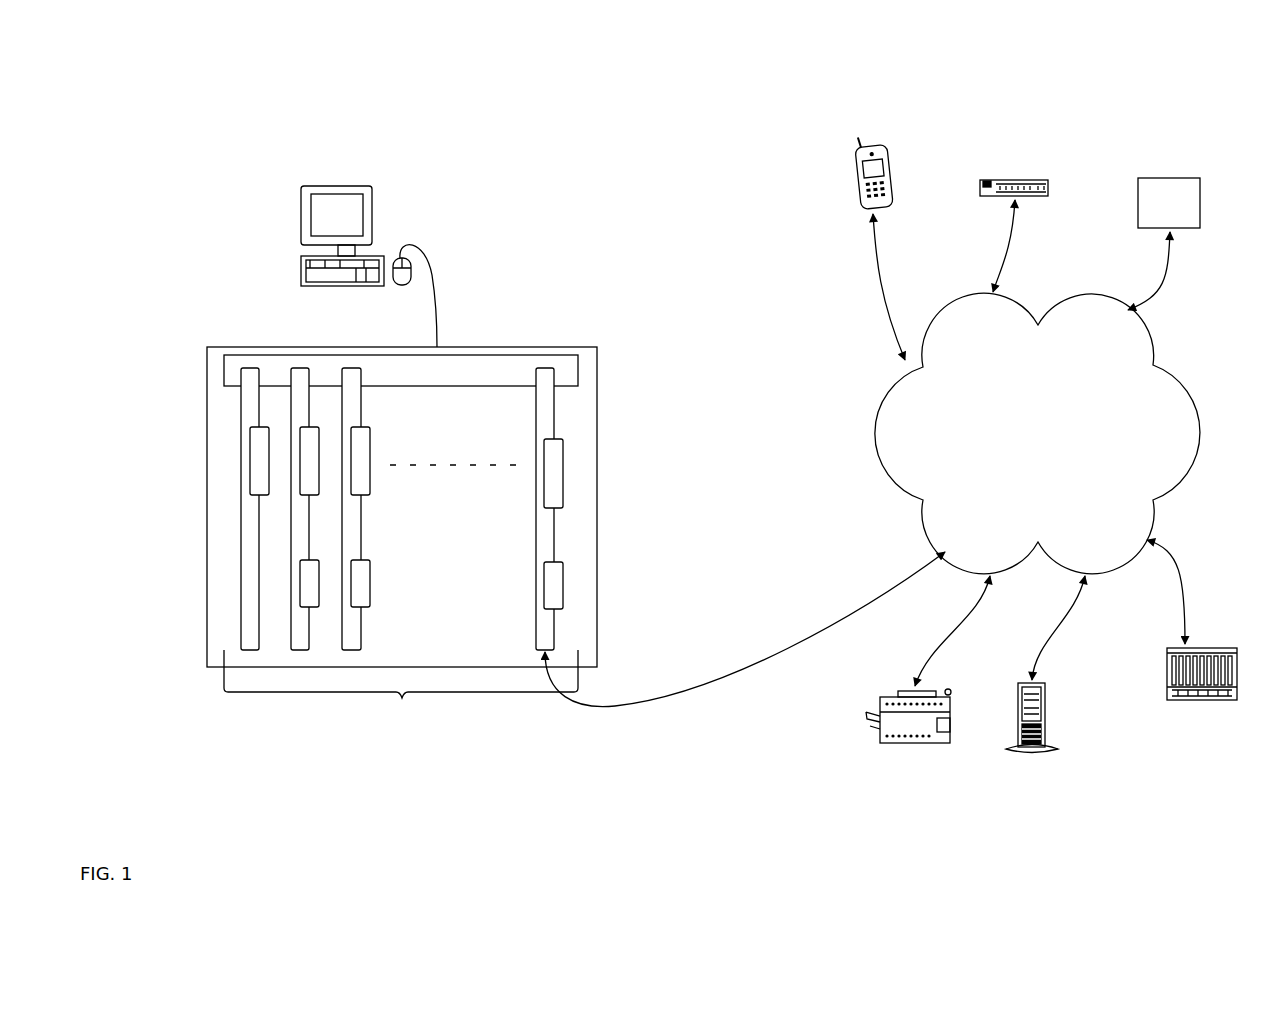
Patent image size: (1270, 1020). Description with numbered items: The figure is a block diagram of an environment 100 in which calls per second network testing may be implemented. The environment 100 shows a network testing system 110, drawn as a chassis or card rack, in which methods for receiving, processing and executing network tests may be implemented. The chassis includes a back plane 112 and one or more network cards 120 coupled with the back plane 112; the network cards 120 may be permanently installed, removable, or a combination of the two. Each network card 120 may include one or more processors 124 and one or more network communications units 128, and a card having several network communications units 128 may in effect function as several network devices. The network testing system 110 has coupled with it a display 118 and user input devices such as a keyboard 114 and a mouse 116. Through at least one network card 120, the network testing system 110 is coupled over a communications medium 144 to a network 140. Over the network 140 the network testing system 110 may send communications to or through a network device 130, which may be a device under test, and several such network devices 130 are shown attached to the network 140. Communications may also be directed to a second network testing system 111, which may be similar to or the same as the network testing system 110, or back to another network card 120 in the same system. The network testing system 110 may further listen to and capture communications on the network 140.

The environment 100 is at (188, 74).
The network testing system 110 is at (462, 347).
The second network testing system 111 is at (1164, 244).
The back plane 112 is at (578, 371).
The keyboard 114 is at (302, 270).
The mouse 116 is at (402, 286).
The display 118 is at (309, 218).
The network cards 120 is at (401, 577).
The processor 124 is at (563, 476).
The network communications unit 128 is at (563, 584).
The network device 130 is at (1039, 448).
The network 140 is at (1037, 433).
The communications medium 144 is at (612, 707).